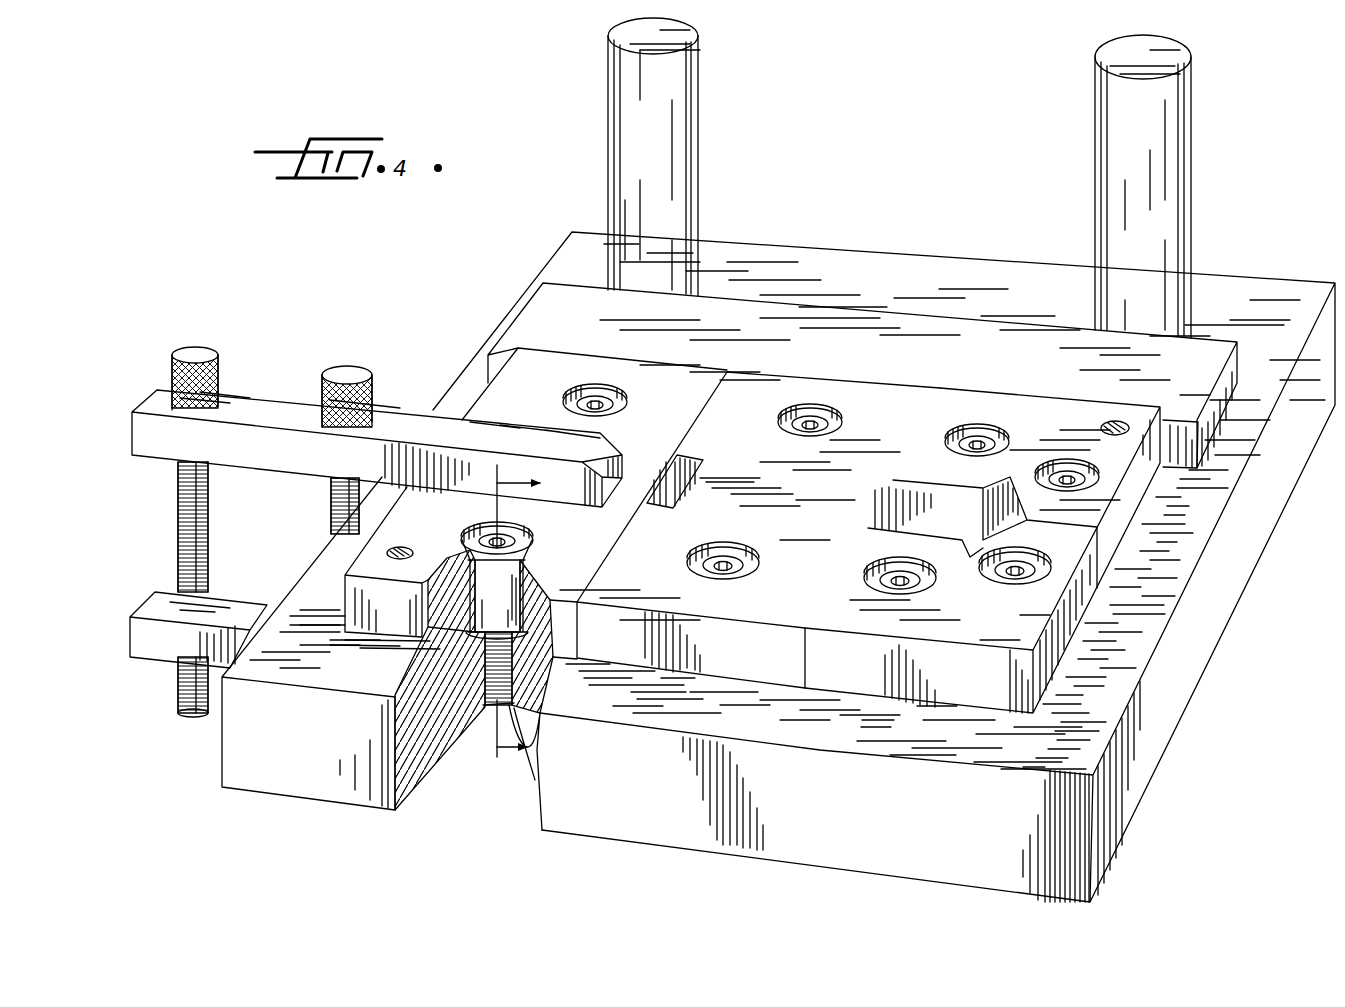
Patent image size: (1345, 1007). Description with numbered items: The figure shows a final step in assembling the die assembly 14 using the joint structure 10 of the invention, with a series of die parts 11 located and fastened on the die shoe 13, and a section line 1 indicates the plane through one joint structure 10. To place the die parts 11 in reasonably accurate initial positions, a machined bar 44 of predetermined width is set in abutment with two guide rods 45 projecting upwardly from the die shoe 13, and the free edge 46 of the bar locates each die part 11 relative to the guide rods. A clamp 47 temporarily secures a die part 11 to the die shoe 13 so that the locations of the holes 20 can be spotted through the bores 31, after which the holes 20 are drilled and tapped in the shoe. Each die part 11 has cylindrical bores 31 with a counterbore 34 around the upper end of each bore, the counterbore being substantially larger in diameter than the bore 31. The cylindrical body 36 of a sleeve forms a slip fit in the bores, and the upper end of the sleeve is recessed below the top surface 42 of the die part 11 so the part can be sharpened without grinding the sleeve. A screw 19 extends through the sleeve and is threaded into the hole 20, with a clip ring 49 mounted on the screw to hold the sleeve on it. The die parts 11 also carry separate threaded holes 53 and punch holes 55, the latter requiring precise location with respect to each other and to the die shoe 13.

The section line 1 is at (496, 614).
The joint structure 10 is at (460, 583).
The die part 11 is at (566, 360).
The die shoe 13 is at (272, 785).
The die assembly 14 is at (481, 310).
The screw 19 is at (484, 675).
The hole 20 is at (530, 752).
The cylindrical bore 31 is at (526, 588).
The counterbore 34 is at (618, 396).
The cylindrical body 36 is at (520, 622).
The top surface 42 is at (318, 597).
The machined bar 44 is at (996, 325).
The guide rods 45 is at (698, 138).
The free edge 46 is at (1178, 457).
The clamp 47 is at (292, 395).
The clip ring 49 is at (428, 630).
The threaded holes 53 is at (395, 548).
The punch holes 55 is at (682, 470).